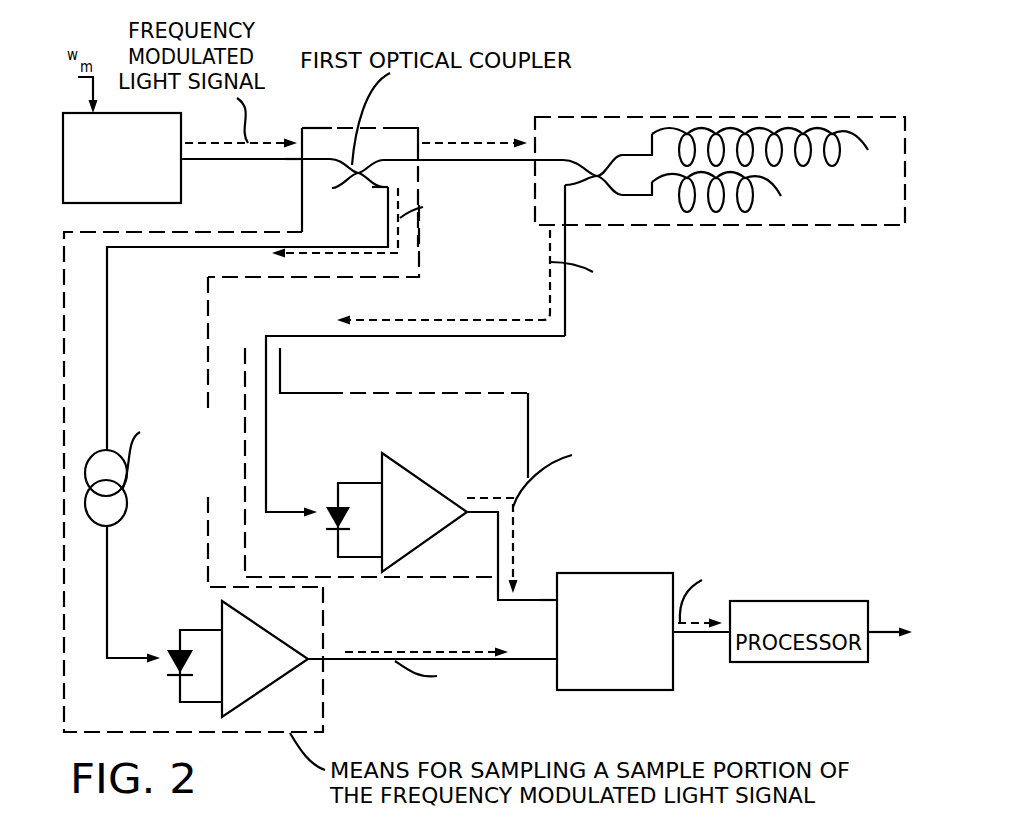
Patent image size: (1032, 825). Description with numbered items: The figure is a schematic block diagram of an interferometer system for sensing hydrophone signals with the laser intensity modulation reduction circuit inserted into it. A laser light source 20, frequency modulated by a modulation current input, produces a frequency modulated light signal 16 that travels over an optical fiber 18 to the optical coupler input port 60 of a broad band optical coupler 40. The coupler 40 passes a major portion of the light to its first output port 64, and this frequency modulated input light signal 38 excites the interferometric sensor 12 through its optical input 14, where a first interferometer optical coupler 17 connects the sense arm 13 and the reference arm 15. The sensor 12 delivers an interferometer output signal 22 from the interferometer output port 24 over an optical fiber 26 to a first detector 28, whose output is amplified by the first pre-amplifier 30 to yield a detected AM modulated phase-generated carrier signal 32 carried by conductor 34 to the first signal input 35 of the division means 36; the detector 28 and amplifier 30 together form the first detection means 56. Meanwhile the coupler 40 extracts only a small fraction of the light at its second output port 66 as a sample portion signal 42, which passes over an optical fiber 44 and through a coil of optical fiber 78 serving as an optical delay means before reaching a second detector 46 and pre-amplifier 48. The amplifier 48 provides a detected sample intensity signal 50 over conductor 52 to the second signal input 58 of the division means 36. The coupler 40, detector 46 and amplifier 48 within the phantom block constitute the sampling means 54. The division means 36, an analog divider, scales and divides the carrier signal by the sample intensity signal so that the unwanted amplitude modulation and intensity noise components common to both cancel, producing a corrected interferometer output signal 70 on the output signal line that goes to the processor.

The interferometric sensor 12 is at (886, 216).
The sense arm 13 is at (652, 141).
The optical input 14 is at (533, 165).
The reference arm 15 is at (784, 192).
The frequency modulated light signal 16 is at (232, 141).
The first interferometer optical coupler 17 is at (595, 165).
The optical fiber 18 is at (260, 159).
The light source 20 is at (122, 158).
The interferometer output signal 22 is at (400, 320).
The interferometer output port 24 is at (567, 230).
The optical fiber 26 is at (317, 333).
The first detector 28 is at (338, 506).
The pre-amplifier A1 30 is at (410, 472).
The detected AM modulated phase-generated carrier signal 32 is at (514, 534).
The conductor 34 is at (498, 580).
The first signal input 35 is at (556, 600).
The division means 36 is at (629, 662).
The frequency modulated input light signal 38 is at (507, 142).
The optical coupler 40 is at (370, 210).
The sample portion signal 42 is at (325, 255).
The optical fiber 44 is at (109, 313).
The second detector 46 is at (165, 668).
The pre-amplifier 48 is at (258, 622).
The detected sample intensity signal 50 is at (417, 652).
The conductor 52 is at (392, 662).
The sampling means 54 is at (182, 361).
The first detection means 56 is at (436, 434).
The second signal input / output signal line 58 is at (720, 633).
The optical coupler input port 60 is at (296, 160).
The first output port 64 is at (385, 160).
The second output port 66 is at (388, 188).
The corrected interferometer output signal 70 is at (690, 620).
The optical fiber 78 is at (118, 517).